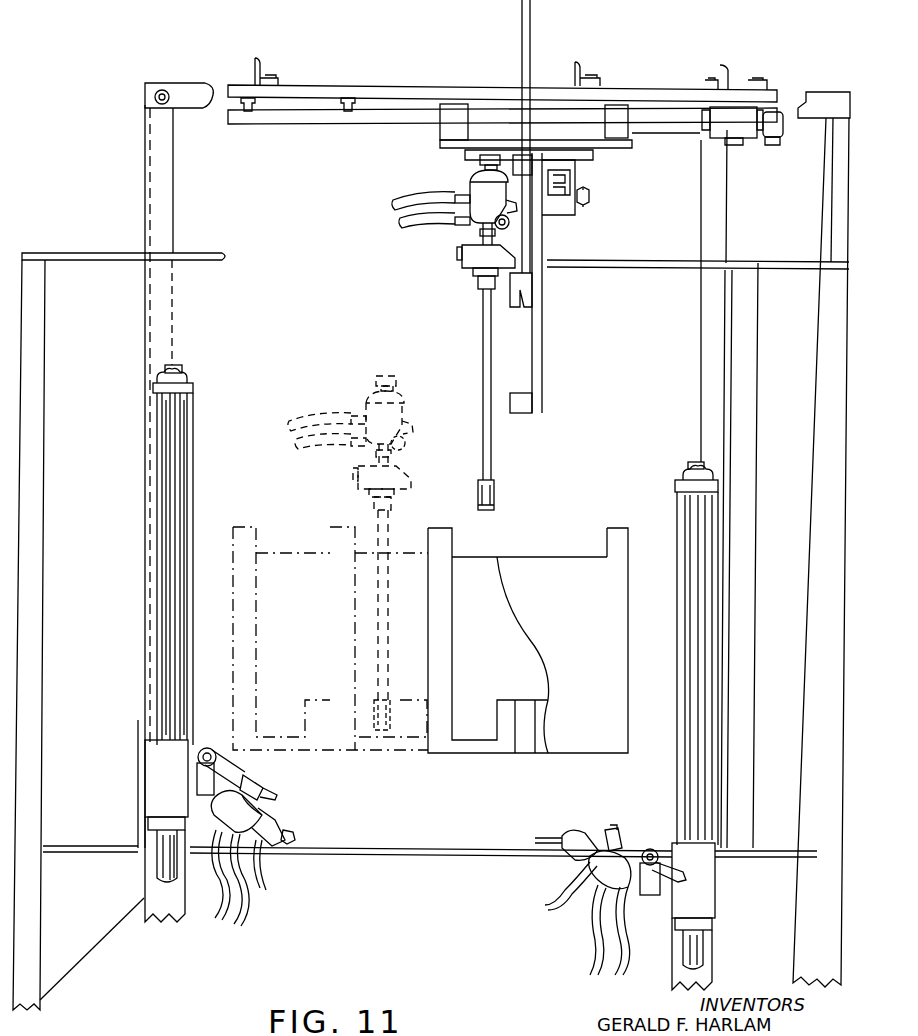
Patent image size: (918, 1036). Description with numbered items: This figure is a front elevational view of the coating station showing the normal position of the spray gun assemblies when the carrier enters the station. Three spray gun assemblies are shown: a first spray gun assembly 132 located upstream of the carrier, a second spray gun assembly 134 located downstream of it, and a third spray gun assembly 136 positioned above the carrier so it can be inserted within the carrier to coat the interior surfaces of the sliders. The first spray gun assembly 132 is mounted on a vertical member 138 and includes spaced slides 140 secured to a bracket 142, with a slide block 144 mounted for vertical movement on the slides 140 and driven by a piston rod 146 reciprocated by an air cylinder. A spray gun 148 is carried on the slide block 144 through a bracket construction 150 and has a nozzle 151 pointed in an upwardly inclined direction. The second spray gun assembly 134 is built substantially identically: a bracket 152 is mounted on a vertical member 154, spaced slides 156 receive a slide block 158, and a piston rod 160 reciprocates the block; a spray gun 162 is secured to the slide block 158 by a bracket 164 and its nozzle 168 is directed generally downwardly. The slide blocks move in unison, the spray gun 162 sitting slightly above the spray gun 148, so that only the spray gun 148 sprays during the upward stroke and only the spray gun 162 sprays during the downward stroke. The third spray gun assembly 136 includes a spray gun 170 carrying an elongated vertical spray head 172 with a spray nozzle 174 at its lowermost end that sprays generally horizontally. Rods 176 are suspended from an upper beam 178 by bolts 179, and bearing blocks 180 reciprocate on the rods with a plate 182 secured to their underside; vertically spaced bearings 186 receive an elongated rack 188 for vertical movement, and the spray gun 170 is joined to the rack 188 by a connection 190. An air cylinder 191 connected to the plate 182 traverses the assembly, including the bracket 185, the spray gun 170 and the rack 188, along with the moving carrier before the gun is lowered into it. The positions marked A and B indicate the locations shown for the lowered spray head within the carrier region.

The first spray gun assembly 132 is at (645, 798).
The second spray gun assembly 134 is at (122, 742).
The third spray gun assembly 136 is at (440, 240).
The vertical member 138 is at (718, 224).
The slides 140 is at (697, 720).
The bracket 142 is at (720, 552).
The slide block 144 is at (705, 897).
The piston rod 146 is at (690, 950).
The spray gun 148 is at (578, 885).
The bracket construction 150 is at (647, 896).
The nozzle 151 is at (562, 836).
The bracket 152 is at (190, 512).
The vertical member 154 is at (168, 320).
The slides 156 is at (165, 632).
The slide block 158 is at (156, 789).
The piston rod 160 is at (160, 865).
The spray gun 162 is at (266, 808).
The bracket 164 is at (210, 778).
The nozzle 168 is at (294, 834).
The spray gun 170 is at (482, 200).
The elongated vertical spray head 172 is at (380, 600).
The spray nozzle 174 is at (495, 496).
The rods 176 is at (320, 125).
The upper beam 178 is at (315, 88).
The bolts 179 is at (240, 111).
The bearing blocks 180 is at (452, 108).
The plate 182 is at (618, 148).
The bracket 185 is at (537, 333).
The bearings 186 is at (480, 162).
The rack 188 is at (532, 52).
The connection 190 is at (508, 222).
The air cylinder 191 is at (683, 112).
The tank A is at (555, 552).
The position B is at (404, 550).